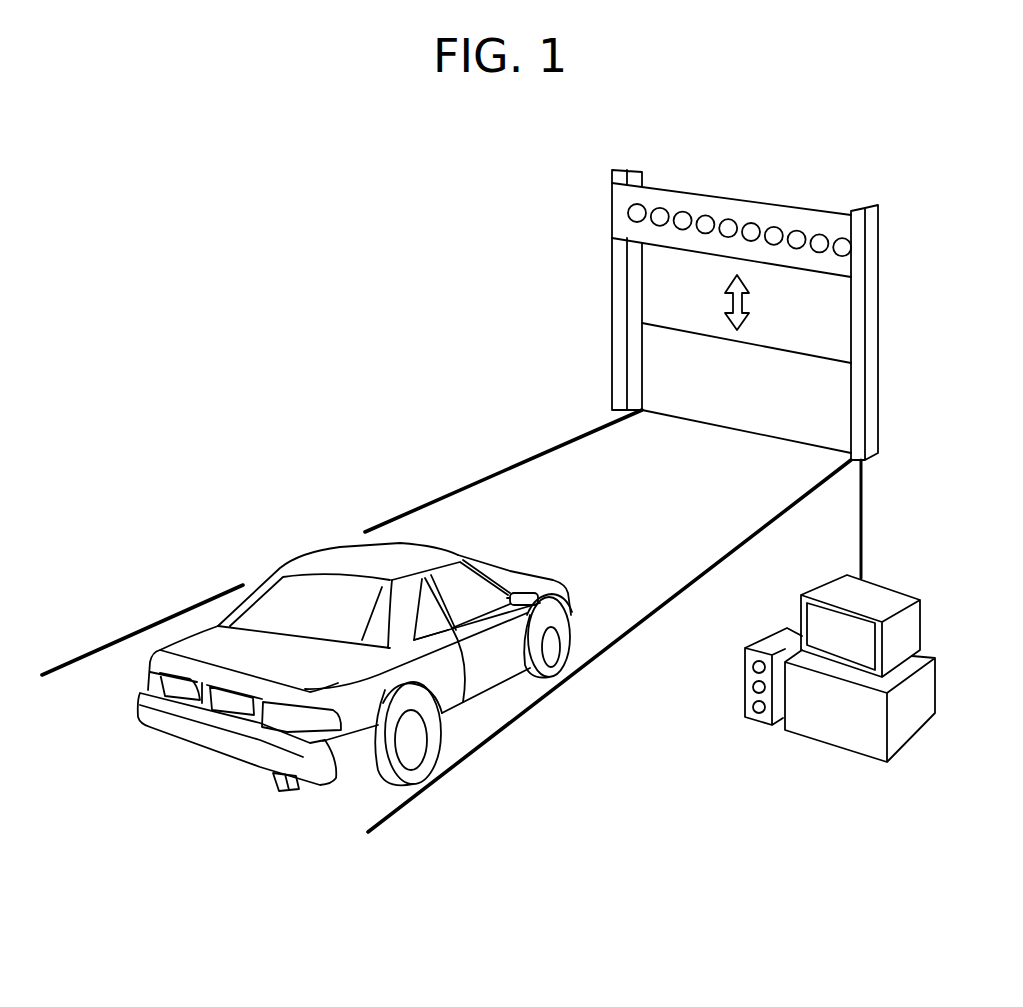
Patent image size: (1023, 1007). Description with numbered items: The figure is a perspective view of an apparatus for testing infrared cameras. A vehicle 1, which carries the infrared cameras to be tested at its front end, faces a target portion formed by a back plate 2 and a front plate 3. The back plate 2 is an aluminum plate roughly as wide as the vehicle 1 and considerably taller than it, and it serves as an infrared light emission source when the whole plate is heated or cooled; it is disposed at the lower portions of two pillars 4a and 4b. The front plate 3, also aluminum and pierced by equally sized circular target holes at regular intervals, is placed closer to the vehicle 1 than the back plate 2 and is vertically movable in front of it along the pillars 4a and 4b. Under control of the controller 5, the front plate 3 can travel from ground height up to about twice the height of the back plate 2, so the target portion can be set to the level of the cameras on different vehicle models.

The vehicle 1 is at (326, 553).
The back plate 2 is at (686, 340).
The front plate 3 is at (816, 220).
The pillar 4a is at (618, 280).
The pillar 4b is at (862, 350).
The controller 5 is at (913, 623).